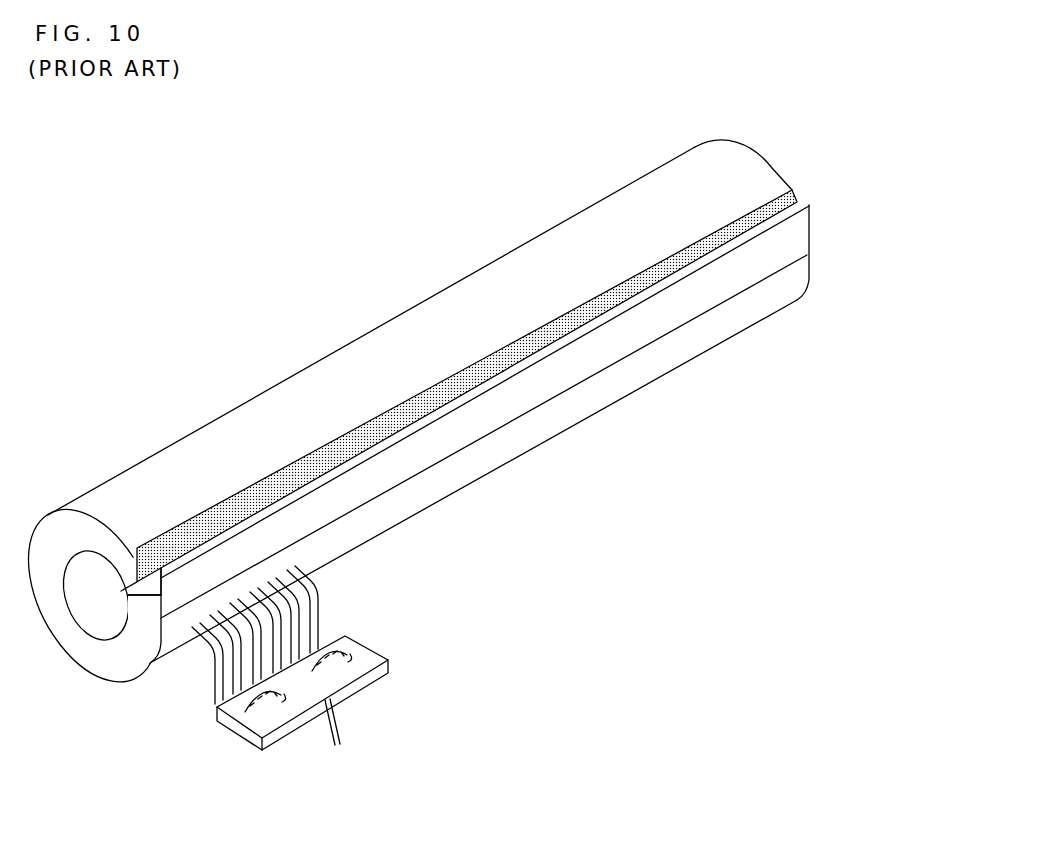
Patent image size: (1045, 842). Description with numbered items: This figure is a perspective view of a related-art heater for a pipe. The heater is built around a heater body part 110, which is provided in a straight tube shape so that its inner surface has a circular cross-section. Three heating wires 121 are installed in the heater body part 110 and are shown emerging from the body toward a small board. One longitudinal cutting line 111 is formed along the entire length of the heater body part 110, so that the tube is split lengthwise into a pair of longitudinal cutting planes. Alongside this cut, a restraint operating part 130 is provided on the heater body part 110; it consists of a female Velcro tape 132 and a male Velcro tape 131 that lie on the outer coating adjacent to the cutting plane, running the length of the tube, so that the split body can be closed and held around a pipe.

The heater body part 110 is at (453, 286).
The longitudinal cutting line 111 is at (143, 597).
The heating wires 121 is at (298, 626).
The restraint operating part 130 is at (534, 403).
The male Velcro tape 131 is at (810, 221).
The female Velcro tape 132 is at (793, 190).